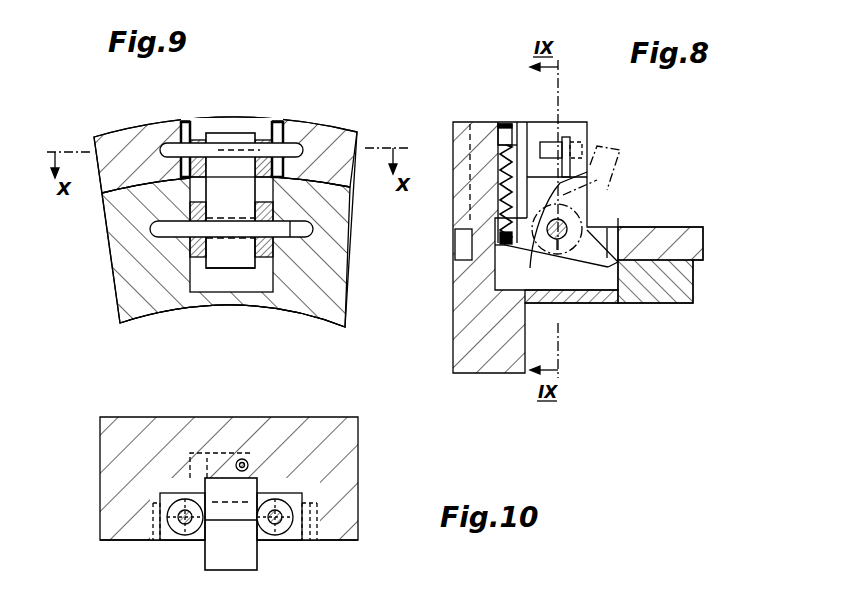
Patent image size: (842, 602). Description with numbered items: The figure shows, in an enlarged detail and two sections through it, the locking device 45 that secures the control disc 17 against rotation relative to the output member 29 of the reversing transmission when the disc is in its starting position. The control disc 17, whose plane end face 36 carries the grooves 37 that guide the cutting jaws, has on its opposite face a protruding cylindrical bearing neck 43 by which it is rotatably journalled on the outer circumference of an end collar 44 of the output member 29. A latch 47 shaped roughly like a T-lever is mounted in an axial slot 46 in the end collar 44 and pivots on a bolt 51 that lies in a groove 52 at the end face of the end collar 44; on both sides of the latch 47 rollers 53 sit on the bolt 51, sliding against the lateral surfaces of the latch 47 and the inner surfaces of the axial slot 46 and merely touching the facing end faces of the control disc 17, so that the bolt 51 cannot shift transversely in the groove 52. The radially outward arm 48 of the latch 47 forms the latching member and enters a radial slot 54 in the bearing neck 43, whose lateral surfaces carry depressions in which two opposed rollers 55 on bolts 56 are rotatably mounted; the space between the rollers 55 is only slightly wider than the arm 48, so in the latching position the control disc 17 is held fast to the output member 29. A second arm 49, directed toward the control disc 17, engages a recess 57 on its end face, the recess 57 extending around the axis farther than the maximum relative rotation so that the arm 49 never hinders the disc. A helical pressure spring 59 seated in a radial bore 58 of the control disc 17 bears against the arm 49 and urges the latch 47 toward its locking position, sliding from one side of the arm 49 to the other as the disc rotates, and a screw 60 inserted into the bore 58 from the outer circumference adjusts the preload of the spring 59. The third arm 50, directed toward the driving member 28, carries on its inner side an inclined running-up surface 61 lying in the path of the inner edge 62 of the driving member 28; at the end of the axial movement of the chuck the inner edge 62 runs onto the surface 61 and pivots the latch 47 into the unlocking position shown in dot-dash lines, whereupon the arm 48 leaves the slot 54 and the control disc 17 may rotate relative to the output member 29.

In FIG. 9, the control disc 17 is at (158, 122).
In FIG. 8, the control disc 17 is at (488, 354).
In FIG. 10, the control disc 17 is at (347, 483).
In FIG. 8, the driving member 28 is at (682, 227).
In FIG. 9, the output member 29 is at (167, 320).
In FIG. 8, the output member 29 is at (680, 283).
In FIG. 8, the plane end face 36 is at (453, 334).
In FIG. 8, the grooves 37 is at (463, 245).
In FIG. 9, the bearing neck 43 is at (343, 150).
In FIG. 9, the end collar 44 is at (342, 253).
In FIG. 8, the locking device 45 is at (650, 163).
In FIG. 9, the axial slot 46 is at (209, 268).
In FIG. 9, the latch 47 is at (230, 163).
In FIG. 8, the latch 47 is at (590, 218).
In FIG. 10, the latch 47 is at (198, 558).
In FIG. 8, the arm 48 is at (565, 197).
In FIG. 8, the arm 49 is at (513, 255).
In FIG. 8, the arm 50 is at (575, 268).
In FIG. 9, the bolt 51 is at (288, 228).
In FIG. 8, the bolt 51 is at (560, 240).
In FIG. 9, the groove 52 is at (152, 232).
In FIG. 9, the rollers 53 is at (262, 258).
In FIG. 9, the slot 54 is at (223, 130).
In FIG. 9, the rollers 55 is at (281, 152).
In FIG. 10, the rollers 55 is at (282, 533).
In FIG. 9, the bolts 56 is at (277, 130).
In FIG. 8, the recess 57 is at (505, 275).
In FIG. 8, the radial bore 58 is at (500, 150).
In FIG. 8, the helical pressure spring 59 is at (500, 166).
In FIG. 10, the helical pressure spring 59 is at (247, 457).
In FIG. 8, the screw 60 is at (497, 124).
In FIG. 8, the inclined running-up surface 61 is at (618, 262).
In FIG. 8, the inner edge 62 is at (625, 300).